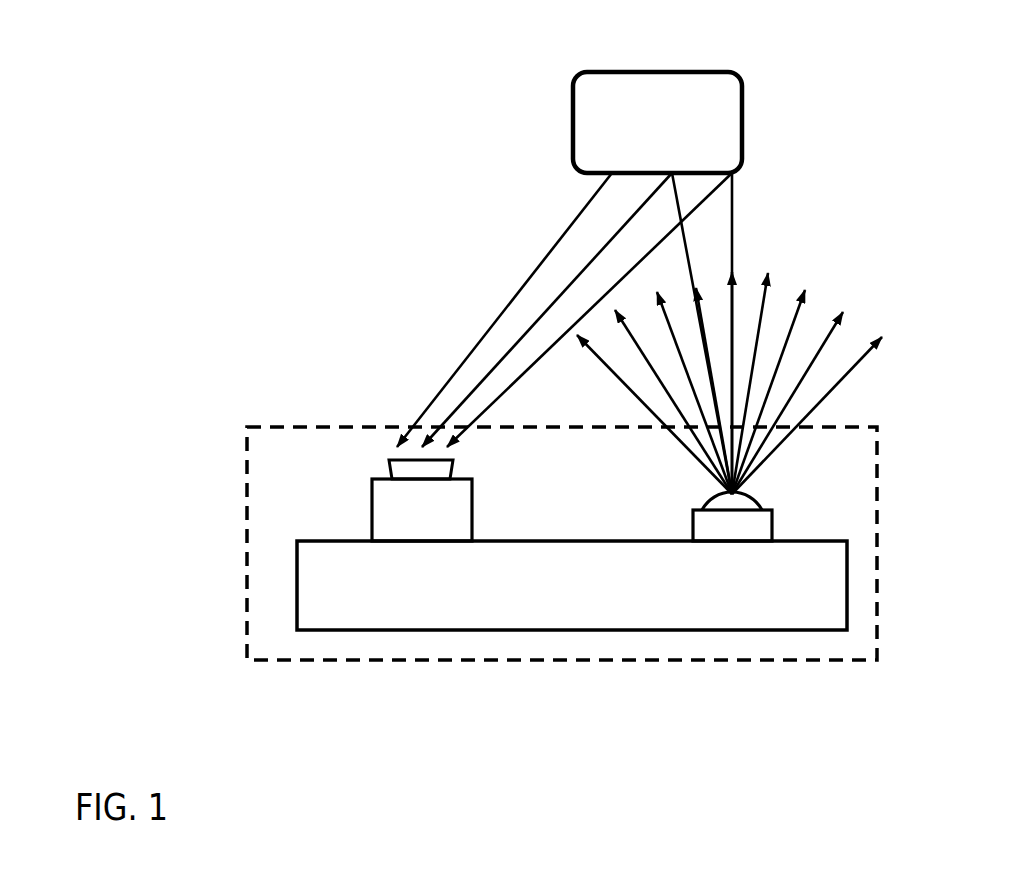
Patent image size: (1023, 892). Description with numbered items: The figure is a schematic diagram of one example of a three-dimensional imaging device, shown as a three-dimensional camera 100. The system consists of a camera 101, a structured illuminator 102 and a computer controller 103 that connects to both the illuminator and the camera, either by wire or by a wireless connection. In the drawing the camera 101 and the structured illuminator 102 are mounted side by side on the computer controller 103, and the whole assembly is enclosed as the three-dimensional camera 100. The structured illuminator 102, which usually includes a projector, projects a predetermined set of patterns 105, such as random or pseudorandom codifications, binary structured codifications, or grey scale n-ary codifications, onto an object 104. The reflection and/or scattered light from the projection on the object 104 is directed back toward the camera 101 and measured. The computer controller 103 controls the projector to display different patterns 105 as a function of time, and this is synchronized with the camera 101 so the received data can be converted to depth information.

The 3D camera 100 is at (877, 630).
The camera 101 is at (368, 492).
The structured illuminator 102 is at (772, 526).
The computer controller 103 is at (847, 573).
The object 104 is at (745, 101).
The patterns 105 is at (768, 295).